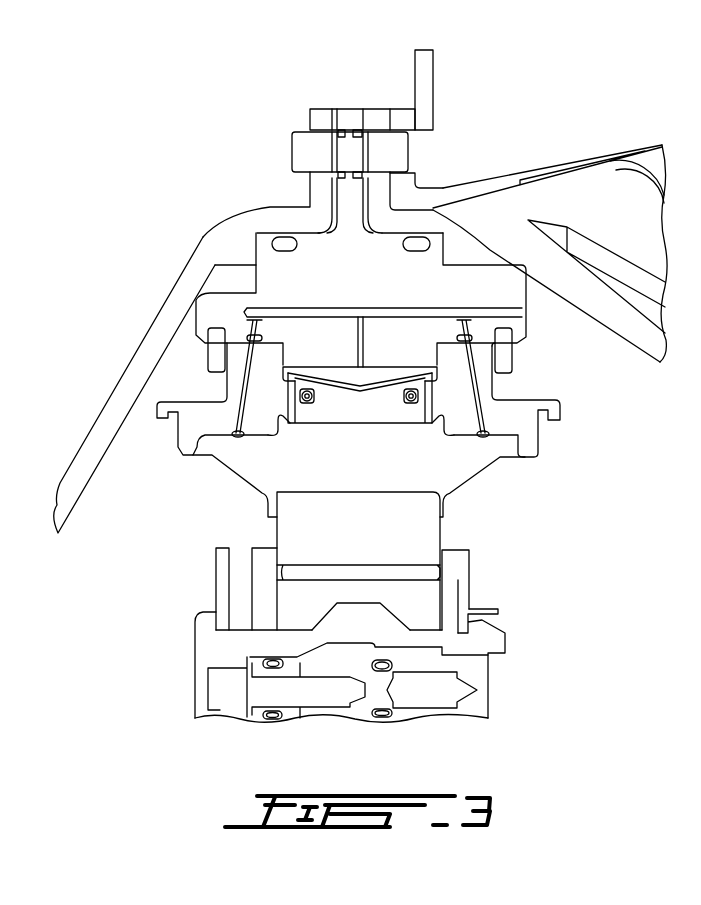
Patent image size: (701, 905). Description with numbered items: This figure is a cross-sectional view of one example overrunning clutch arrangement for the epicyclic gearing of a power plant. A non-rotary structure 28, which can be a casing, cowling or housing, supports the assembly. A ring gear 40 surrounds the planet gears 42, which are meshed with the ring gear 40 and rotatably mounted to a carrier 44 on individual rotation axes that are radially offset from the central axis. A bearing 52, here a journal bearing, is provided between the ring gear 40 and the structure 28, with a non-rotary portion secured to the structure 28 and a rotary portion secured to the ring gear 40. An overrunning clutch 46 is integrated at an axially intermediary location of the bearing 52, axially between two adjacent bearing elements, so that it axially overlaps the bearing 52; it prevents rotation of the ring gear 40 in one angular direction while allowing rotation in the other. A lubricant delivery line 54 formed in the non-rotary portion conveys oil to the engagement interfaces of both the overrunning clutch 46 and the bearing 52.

The structure 28 is at (413, 200).
The ring gear 40 is at (388, 467).
The planet gears 42 is at (390, 598).
The carrier 44 is at (215, 594).
The overrunning clutch 46 is at (388, 380).
The bearing 52 is at (232, 310).
The lubricant delivery line 54 is at (312, 317).